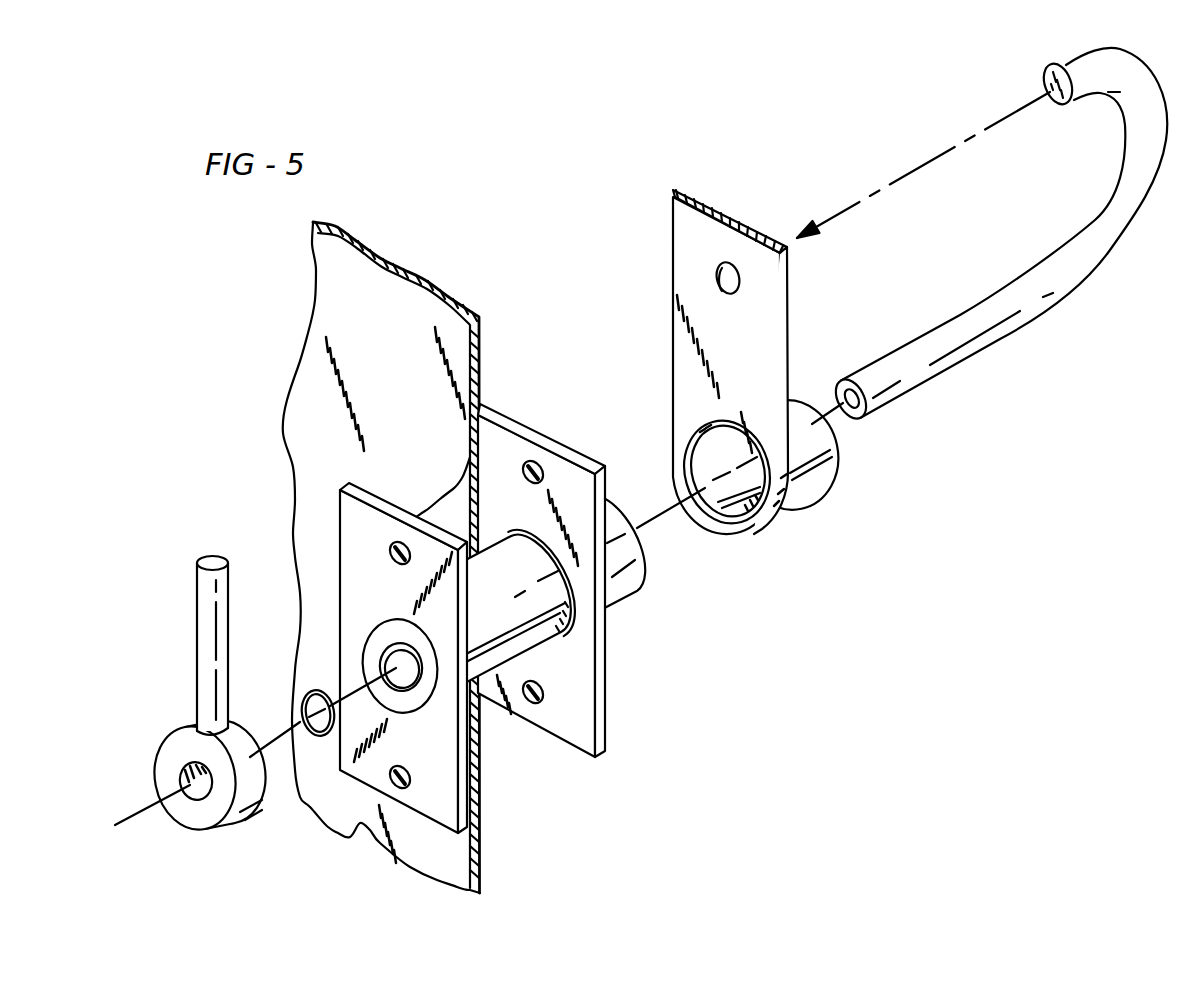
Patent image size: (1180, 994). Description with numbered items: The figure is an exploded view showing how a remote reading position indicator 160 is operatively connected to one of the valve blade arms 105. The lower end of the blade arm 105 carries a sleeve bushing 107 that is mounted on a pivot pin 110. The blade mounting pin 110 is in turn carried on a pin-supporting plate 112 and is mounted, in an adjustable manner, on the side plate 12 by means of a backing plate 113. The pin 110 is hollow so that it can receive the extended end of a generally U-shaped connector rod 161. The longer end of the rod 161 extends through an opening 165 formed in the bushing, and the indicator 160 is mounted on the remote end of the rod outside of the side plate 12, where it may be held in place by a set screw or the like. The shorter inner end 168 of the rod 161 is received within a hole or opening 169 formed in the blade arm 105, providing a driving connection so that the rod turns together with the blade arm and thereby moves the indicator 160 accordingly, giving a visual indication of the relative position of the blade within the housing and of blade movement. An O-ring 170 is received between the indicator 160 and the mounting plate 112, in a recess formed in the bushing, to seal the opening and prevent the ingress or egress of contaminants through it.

The side plate 12 is at (397, 263).
The blade arm 105 is at (717, 231).
The sleeve bushing 107 is at (817, 481).
The pivot pin 110 is at (622, 581).
The pin-supporting plate 112 is at (427, 797).
The backing plate 113 is at (600, 731).
The position indicator 160 is at (165, 741).
The connector rod 161 is at (983, 350).
The opening 165 is at (387, 632).
The shorter inner end 168 is at (1062, 52).
The hole 169 is at (737, 285).
The O-ring 170 is at (300, 690).